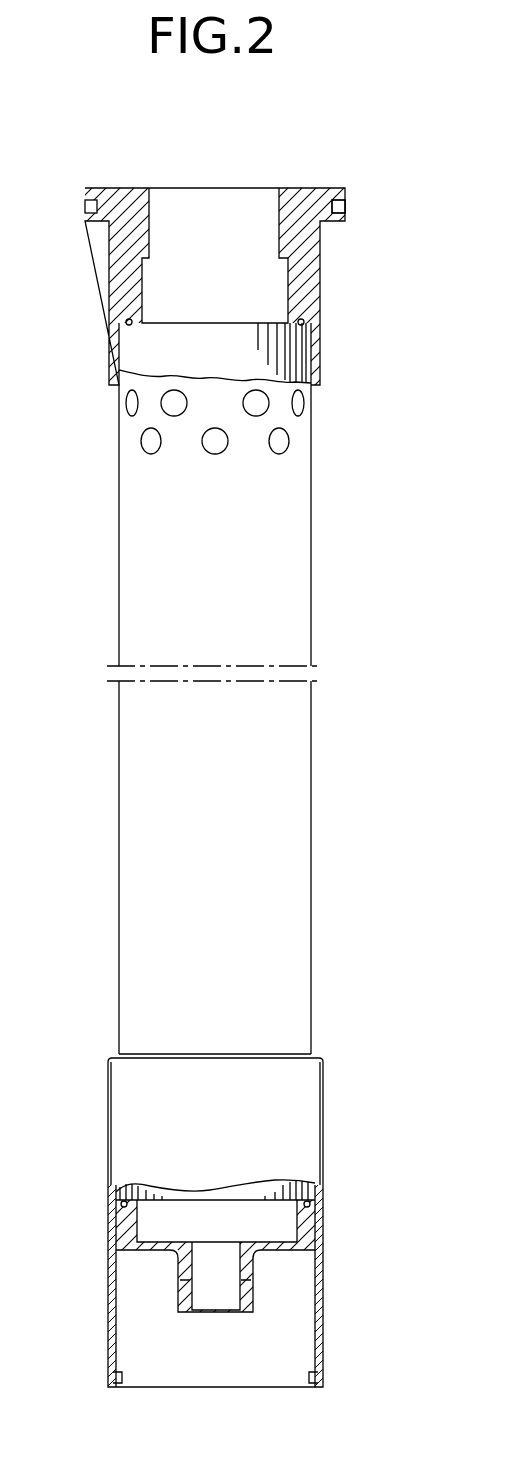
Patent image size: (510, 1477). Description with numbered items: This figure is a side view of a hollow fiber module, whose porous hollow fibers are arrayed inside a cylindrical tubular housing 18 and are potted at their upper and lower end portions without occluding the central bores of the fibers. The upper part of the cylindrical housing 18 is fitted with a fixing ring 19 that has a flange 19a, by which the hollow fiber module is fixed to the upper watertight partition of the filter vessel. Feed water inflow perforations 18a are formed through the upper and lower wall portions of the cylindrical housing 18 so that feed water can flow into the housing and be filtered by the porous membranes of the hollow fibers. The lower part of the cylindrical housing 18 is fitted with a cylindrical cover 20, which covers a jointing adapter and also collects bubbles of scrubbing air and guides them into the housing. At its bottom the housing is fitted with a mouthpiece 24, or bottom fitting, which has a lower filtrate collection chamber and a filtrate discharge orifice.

The fixing ring 19 is at (320, 282).
The flange 19a is at (345, 193).
The cylindrical housing 18 is at (311, 514).
The feed water inflow perforations 18a is at (142, 441).
The cylindrical cover 20 is at (323, 1316).
The mouthpiece 24 is at (181, 1270).